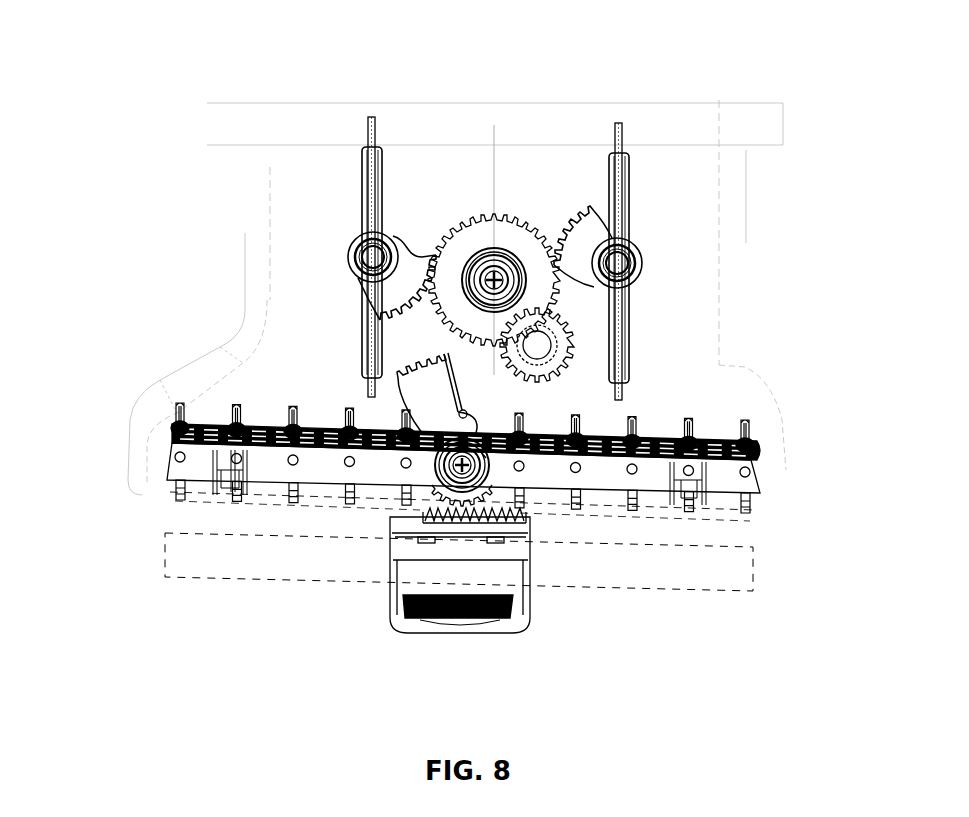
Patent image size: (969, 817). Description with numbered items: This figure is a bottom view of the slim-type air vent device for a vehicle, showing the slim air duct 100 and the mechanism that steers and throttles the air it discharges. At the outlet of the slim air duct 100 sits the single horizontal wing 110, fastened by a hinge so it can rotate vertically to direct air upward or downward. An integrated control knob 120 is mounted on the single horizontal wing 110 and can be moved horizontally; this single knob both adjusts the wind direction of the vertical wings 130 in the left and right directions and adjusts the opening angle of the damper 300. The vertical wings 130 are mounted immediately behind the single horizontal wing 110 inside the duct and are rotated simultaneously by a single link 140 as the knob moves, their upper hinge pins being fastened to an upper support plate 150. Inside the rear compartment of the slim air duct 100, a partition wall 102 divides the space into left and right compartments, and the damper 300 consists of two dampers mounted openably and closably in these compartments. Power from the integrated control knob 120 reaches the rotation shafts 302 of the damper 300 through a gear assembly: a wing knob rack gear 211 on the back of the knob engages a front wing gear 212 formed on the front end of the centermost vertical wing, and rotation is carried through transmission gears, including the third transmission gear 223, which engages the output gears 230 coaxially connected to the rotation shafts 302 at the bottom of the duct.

The slim air duct 100 is at (131, 411).
The partition wall 102 is at (493, 138).
The single horizontal wing 110 is at (675, 597).
The integrated control knob 120 is at (378, 601).
The vertical wings 130 is at (175, 488).
The single link 140 is at (720, 432).
The upper support plate 150 is at (732, 477).
The wing knob rack gear 211 is at (523, 518).
The front wing gear 212 is at (540, 508).
The third transmission gear 223 is at (531, 223).
The output gears 230 is at (435, 260).
The damper 300 is at (367, 131).
The rotation shafts 302 is at (620, 263).